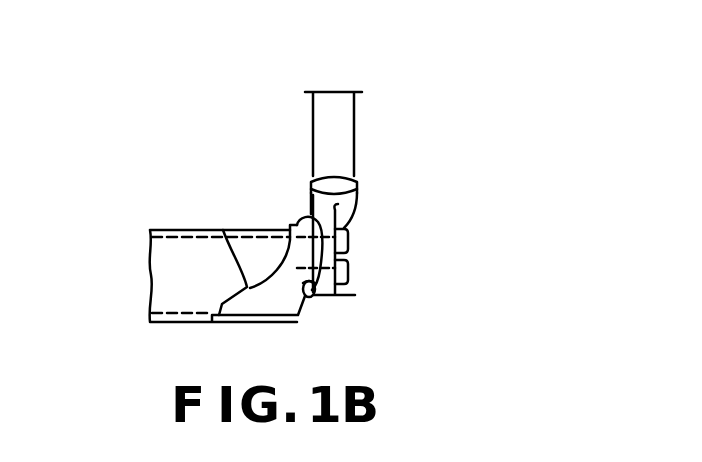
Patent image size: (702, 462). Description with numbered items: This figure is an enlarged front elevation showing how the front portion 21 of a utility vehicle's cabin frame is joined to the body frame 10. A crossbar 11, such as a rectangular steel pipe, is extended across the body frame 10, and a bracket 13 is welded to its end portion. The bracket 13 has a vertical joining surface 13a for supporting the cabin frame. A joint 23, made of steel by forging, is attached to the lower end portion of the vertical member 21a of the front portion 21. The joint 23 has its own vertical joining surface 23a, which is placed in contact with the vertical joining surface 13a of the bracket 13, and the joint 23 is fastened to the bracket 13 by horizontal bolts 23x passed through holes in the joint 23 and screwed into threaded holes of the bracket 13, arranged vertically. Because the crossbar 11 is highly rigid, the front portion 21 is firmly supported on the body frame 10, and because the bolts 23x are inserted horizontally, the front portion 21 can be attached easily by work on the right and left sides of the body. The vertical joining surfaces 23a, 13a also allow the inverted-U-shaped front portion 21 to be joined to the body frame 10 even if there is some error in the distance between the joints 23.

The body frame 10 is at (141, 188).
The crossbar 11 is at (162, 270).
The bracket 13 is at (223, 230).
The vertical joining surface 13a is at (312, 215).
The front portion 21 is at (415, 160).
The vertical member 21a is at (343, 133).
The joint 23 is at (355, 295).
The bolt 23x is at (350, 270).
The vertical joining surface 23a is at (312, 296).